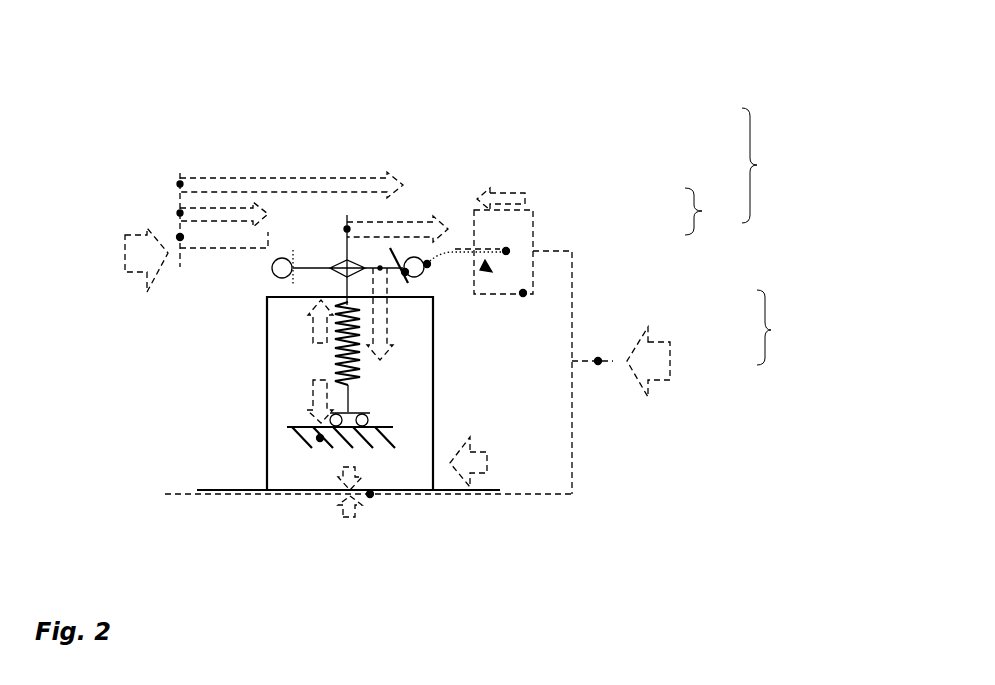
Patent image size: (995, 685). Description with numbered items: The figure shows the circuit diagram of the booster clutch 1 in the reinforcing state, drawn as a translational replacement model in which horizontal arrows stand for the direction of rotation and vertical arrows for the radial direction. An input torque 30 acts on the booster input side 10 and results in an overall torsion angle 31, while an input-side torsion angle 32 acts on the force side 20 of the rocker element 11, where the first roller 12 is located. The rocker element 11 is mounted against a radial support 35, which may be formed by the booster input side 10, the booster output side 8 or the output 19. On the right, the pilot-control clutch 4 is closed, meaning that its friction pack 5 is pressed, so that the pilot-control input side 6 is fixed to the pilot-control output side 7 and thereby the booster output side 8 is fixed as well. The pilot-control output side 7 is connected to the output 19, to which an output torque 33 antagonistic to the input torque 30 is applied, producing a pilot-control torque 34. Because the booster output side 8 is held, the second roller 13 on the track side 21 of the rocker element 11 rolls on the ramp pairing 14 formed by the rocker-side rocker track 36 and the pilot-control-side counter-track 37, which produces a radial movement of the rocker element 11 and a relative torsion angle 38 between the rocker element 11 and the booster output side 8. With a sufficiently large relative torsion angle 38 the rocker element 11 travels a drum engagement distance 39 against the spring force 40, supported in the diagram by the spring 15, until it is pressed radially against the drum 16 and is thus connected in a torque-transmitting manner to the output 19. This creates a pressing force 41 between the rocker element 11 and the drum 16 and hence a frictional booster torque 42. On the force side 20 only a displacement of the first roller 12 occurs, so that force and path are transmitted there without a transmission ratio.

The booster clutch 1 is at (732, 42).
The pilot-control clutch 4 is at (774, 327).
The friction pack 5 is at (487, 264).
The pilot-control input side 6 is at (506, 252).
The pilot-control output side 7 is at (523, 293).
The booster output side 8 is at (611, 264).
The booster input side 10 is at (177, 237).
The rocker element 11 is at (360, 263).
The first roller 12 is at (267, 297).
The second roller 13 is at (440, 222).
The ramp pairing 14 is at (714, 211).
The spring 15 is at (367, 372).
The drum 16 is at (370, 494).
The output 19 is at (598, 362).
The force side 20 is at (245, 393).
The track side 21 is at (770, 165).
The input torque 30 is at (152, 280).
The torsion angle 31 is at (200, 183).
The input-side torsion angle 32 is at (223, 212).
The output torque 33 is at (660, 388).
The pilot-control torque 34 is at (480, 195).
The radial support 35 is at (320, 438).
The rocker track 36 is at (432, 258).
The counter-track 37 is at (545, 252).
The relative torsion angle 38 is at (390, 248).
The drum engagement distance 39 is at (387, 314).
The spring force 40 is at (313, 325).
The pressing force 41 is at (345, 510).
The booster torque 42 is at (478, 487).